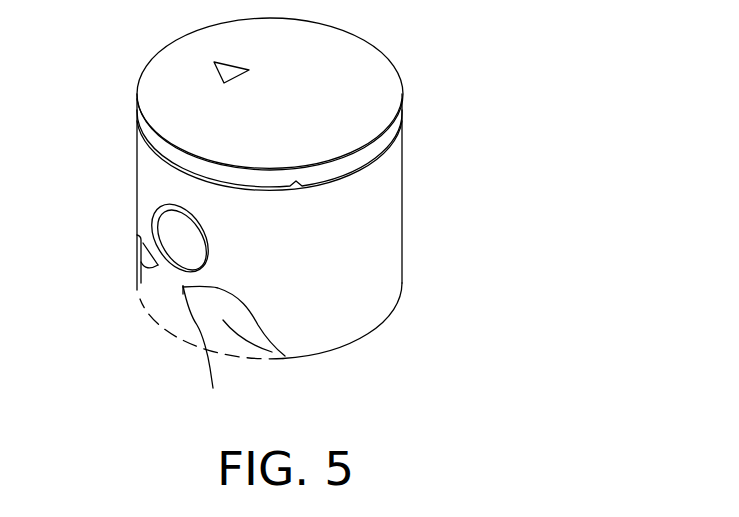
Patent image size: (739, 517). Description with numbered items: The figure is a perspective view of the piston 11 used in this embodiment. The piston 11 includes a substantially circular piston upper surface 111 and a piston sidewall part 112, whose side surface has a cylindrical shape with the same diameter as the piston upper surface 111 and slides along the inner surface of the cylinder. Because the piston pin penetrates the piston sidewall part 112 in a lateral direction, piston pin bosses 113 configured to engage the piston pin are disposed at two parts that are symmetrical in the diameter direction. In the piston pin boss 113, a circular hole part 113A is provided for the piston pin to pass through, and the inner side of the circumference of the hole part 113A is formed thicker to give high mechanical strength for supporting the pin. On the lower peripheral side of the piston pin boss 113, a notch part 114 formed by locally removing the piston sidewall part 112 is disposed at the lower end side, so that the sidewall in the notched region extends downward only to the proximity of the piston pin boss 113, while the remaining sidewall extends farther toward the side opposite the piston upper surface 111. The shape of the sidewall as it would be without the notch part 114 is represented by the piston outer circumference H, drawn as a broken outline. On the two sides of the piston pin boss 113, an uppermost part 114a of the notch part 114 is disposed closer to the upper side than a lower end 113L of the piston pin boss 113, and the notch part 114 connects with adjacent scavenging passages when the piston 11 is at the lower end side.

The piston 11 is at (505, 403).
The piston upper surface 111 is at (336, 100).
The piston sidewall part 112 is at (343, 238).
The piston pin boss 113 is at (168, 271).
The hole part 113A is at (172, 233).
The lower end of the piston pin boss 113L is at (211, 353).
The notch part 114 is at (281, 353).
The uppermost part of the notch part 114a is at (141, 240).
The piston outer circumference H is at (175, 327).